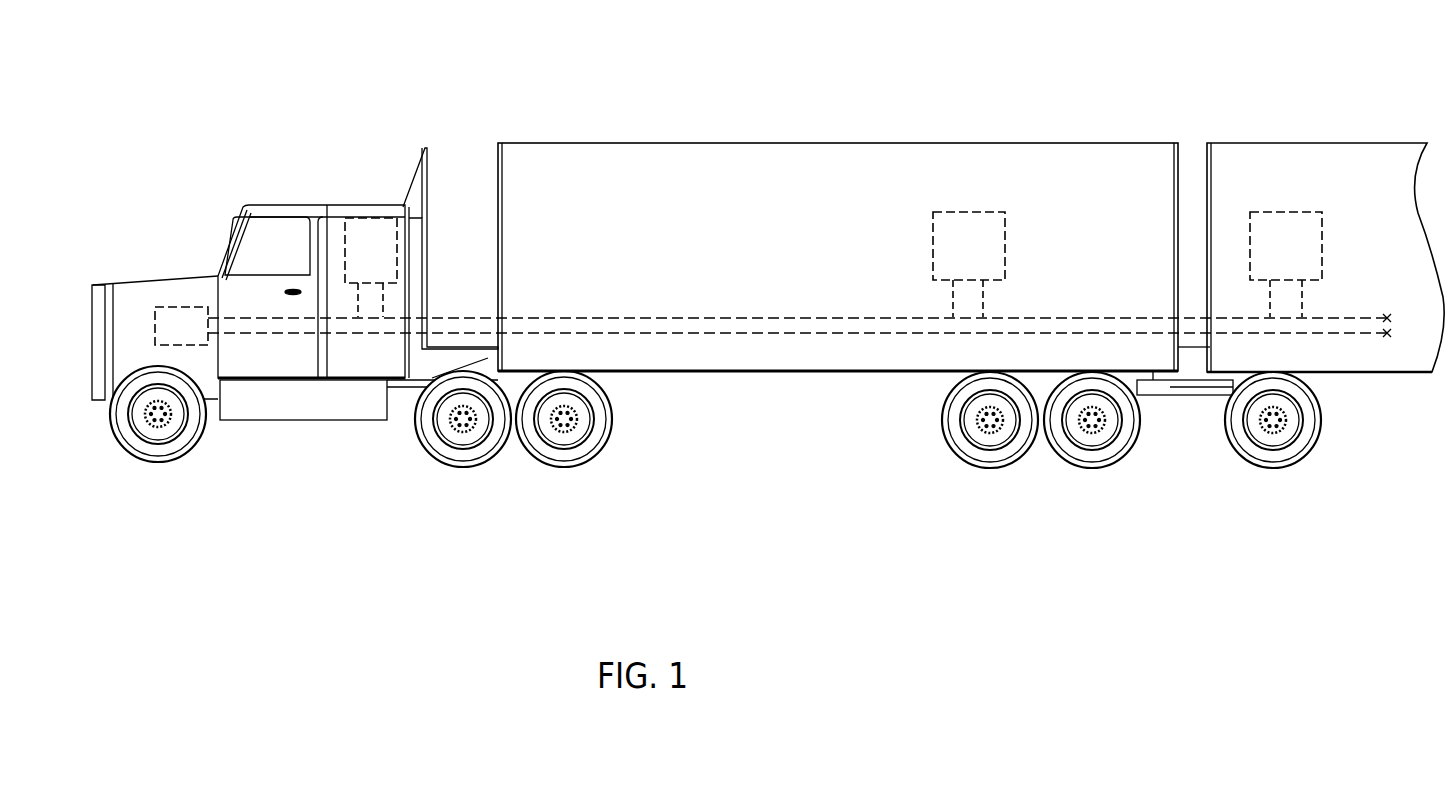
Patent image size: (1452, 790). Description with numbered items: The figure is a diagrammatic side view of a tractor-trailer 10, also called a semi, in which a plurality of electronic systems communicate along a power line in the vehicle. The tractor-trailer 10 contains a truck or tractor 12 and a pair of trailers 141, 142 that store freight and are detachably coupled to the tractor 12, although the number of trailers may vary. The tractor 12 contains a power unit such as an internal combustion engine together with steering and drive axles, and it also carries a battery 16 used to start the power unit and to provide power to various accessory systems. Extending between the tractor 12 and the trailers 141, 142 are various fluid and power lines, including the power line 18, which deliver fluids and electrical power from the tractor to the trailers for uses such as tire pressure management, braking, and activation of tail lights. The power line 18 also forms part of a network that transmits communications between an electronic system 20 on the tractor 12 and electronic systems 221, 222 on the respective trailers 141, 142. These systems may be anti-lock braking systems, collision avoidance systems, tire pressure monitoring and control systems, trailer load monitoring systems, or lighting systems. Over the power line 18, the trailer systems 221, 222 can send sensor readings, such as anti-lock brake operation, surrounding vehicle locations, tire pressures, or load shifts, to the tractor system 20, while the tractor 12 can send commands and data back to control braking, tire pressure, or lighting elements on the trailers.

The tractor-trailer 10 is at (216, 170).
The tractor 12 is at (127, 297).
The first trailer 141 is at (638, 162).
The second trailer 142 is at (1302, 167).
The battery 16 is at (178, 323).
The power line 18 is at (717, 318).
The electronic system 20 is at (372, 235).
The first trailer electronic system 221 is at (990, 247).
The second trailer electronic system 222 is at (1303, 237).